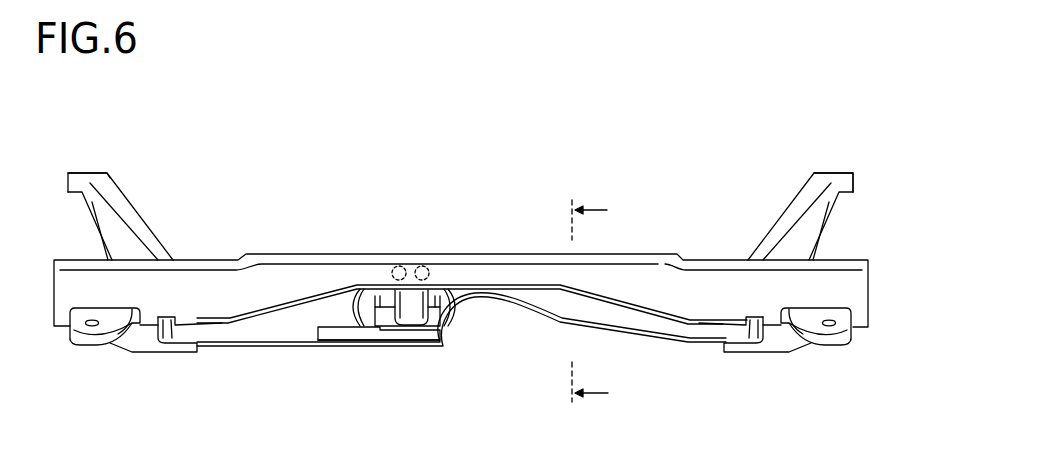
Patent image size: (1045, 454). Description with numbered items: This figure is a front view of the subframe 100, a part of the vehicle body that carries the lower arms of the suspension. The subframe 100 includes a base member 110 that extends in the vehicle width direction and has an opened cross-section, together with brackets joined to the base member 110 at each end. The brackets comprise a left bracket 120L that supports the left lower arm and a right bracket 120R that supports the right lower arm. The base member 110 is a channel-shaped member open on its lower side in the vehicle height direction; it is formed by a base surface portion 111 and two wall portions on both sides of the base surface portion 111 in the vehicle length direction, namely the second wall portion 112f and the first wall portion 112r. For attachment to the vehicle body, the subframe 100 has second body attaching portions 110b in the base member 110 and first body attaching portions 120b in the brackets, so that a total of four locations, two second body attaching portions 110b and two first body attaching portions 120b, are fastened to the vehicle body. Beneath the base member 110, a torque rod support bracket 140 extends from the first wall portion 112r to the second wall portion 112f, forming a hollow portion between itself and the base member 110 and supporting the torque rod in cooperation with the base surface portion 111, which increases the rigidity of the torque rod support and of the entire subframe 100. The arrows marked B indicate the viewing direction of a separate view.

The subframe 100 is at (657, 228).
The base member 110 is at (485, 254).
The base surface portion 111 is at (387, 254).
The second body attaching portion 110b is at (88, 340).
The first wall portion 112r is at (237, 297).
The second wall portion 112f is at (293, 327).
The left bracket 120L is at (132, 204).
The right bracket 120R is at (830, 222).
The first body attaching portion 120b is at (77, 173).
The torque rod support bracket 140 is at (474, 328).